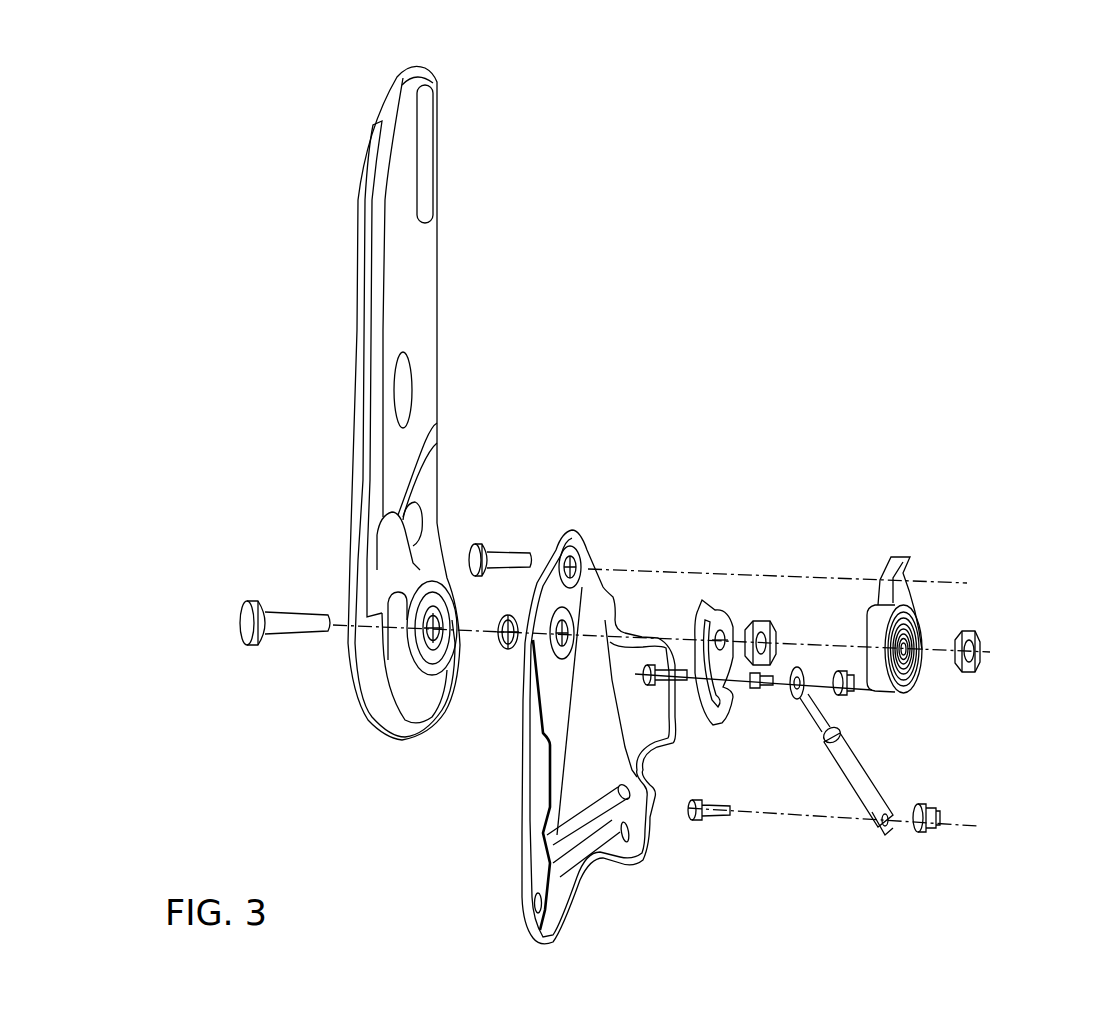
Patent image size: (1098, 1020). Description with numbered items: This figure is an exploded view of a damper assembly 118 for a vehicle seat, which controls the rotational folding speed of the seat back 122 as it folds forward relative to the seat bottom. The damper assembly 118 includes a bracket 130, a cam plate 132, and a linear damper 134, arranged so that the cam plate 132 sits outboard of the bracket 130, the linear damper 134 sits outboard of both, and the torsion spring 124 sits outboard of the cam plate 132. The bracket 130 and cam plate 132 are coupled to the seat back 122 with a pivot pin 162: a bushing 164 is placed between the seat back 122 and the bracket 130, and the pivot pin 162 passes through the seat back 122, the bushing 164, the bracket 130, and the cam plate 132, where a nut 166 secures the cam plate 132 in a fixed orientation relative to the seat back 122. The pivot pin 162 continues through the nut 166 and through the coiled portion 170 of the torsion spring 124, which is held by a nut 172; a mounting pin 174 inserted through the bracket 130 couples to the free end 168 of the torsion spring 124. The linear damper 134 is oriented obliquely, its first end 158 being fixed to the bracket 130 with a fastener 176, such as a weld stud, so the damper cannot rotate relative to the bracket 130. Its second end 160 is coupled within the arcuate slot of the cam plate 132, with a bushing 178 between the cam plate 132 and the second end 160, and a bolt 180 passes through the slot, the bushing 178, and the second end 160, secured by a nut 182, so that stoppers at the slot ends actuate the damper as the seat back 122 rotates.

The damper assembly 118 is at (925, 428).
The seat back 122 is at (428, 68).
The torsion spring 124 is at (918, 617).
The bracket 130 is at (615, 603).
The cam plate 132 is at (720, 610).
The linear damper 134 is at (860, 770).
The first end 158 is at (885, 835).
The second end 160 is at (797, 698).
The pivot pin 162 is at (292, 610).
The bushing 164 is at (503, 648).
The nut 166 is at (775, 628).
The free end 168 is at (900, 560).
The coiled portion 170 is at (915, 672).
The nut 172 is at (985, 640).
The mounting pin 174 is at (503, 548).
The fastener 176 is at (715, 818).
The bushing 178 is at (753, 693).
The bolt 180 is at (678, 667).
The nut 182 is at (848, 692).